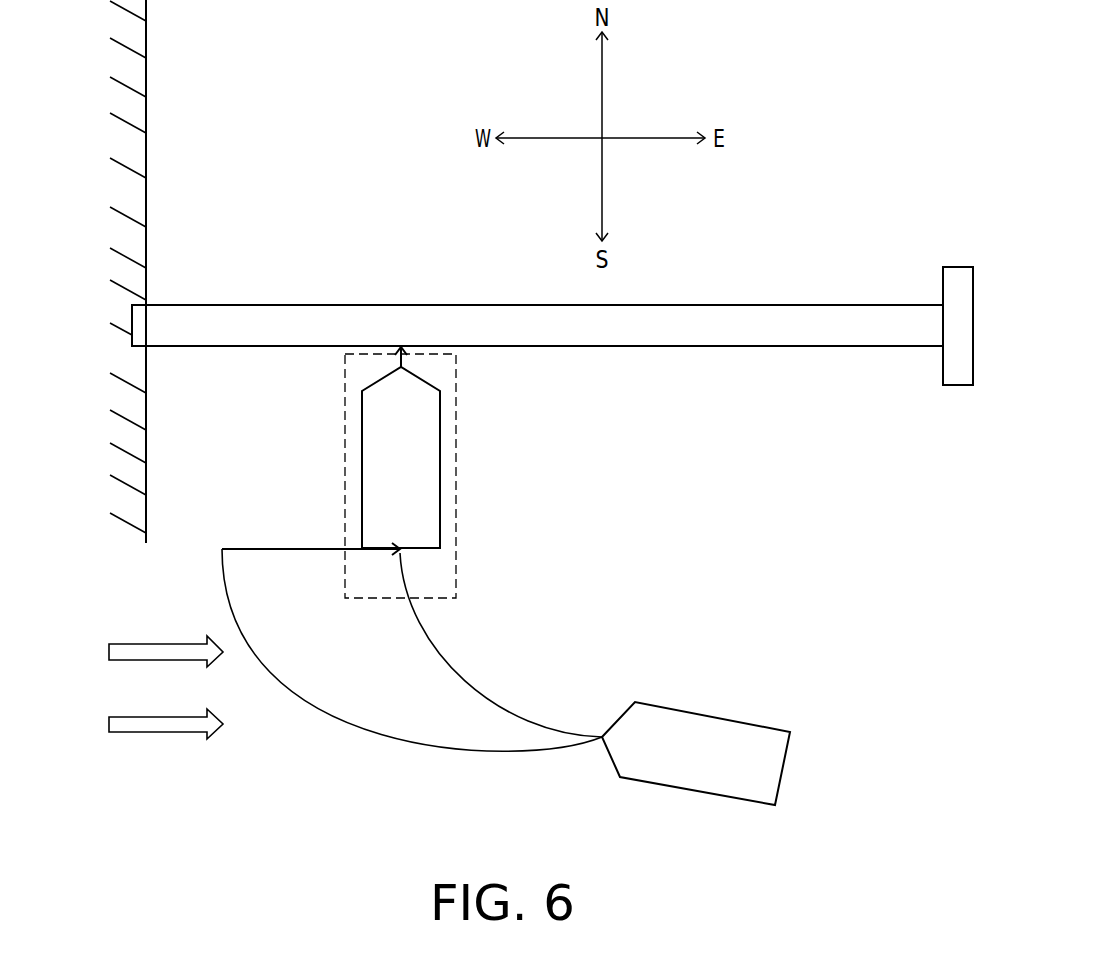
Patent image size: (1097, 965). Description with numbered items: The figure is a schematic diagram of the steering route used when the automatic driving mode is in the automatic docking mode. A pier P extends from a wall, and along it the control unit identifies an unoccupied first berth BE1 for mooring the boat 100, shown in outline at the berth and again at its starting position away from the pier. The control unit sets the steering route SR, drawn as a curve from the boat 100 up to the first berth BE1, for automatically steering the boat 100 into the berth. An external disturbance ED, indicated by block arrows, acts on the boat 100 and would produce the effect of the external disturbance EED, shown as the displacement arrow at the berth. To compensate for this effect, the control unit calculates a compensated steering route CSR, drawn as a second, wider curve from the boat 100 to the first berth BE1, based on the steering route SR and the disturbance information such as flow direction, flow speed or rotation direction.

The boat 100 is at (576, 576).
The pier P is at (815, 305).
The first berth BE1 is at (400, 476).
The effect of the external disturbance EED is at (311, 537).
The compensated steering route CSR is at (412, 651).
The steering route SR is at (501, 645).
The external disturbance ED is at (109, 657).